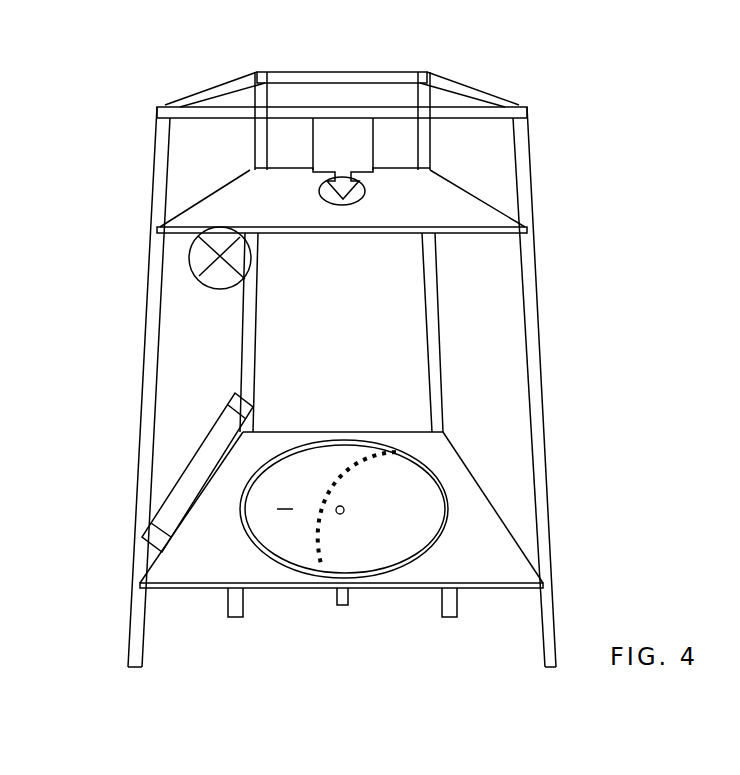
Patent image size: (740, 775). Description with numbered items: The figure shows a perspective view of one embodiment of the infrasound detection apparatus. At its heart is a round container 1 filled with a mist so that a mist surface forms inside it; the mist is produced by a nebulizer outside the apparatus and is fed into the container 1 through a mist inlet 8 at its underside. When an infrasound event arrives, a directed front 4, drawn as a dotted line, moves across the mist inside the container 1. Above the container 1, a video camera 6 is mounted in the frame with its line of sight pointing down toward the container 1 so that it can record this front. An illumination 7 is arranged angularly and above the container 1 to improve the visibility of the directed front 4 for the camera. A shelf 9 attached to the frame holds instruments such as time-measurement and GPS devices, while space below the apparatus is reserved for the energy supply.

The round container 1 is at (398, 497).
The directed front 4 is at (320, 545).
The video camera 6 is at (350, 135).
The illumination 7 is at (190, 256).
The mist inlet 8 is at (340, 600).
The shelf 9 is at (163, 515).